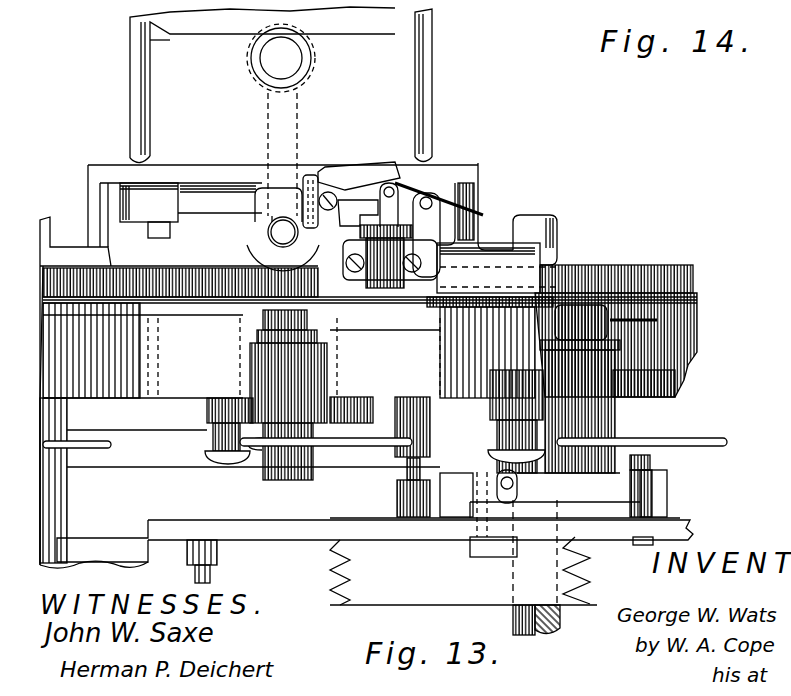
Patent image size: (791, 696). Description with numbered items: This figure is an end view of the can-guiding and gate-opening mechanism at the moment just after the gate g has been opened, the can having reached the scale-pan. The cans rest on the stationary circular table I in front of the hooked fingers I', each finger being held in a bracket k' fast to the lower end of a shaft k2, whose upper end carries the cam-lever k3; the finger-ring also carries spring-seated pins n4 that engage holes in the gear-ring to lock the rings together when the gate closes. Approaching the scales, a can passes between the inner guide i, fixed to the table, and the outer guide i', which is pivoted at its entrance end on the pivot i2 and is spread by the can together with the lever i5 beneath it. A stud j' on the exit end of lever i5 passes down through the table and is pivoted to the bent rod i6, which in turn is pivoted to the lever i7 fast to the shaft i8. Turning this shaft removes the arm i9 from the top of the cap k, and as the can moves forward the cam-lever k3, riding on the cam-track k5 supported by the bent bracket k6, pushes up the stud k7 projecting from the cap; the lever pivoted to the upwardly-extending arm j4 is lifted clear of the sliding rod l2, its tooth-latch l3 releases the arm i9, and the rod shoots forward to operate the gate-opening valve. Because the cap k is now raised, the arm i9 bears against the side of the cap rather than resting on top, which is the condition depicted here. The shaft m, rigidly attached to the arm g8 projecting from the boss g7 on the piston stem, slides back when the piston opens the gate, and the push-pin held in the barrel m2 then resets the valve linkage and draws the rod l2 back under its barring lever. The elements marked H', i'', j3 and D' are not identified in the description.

The frame H' is at (281, 85).
The gate g is at (132, 38).
The boss g7 is at (313, 58).
The arm g8 is at (293, 122).
The shaft m is at (281, 232).
The barrel m2 is at (277, 252).
The arm i9 is at (271, 218).
The inner guide i is at (501, 346).
The tooth-latch l3 is at (350, 197).
The sliding rod l2 is at (331, 194).
The pawl i'' is at (376, 178).
The link j3 is at (400, 178).
The outer guide i' is at (578, 325).
The upwardly-extending arm j4 is at (440, 235).
The cap k is at (472, 206).
The stud k7 is at (394, 300).
The bent bracket k6 is at (498, 254).
The cam-track k5 is at (441, 300).
The cam-lever k3 is at (359, 323).
The shaft k2 is at (260, 313).
The bracket k' is at (449, 410).
The spring-seated pin n4 is at (216, 442).
The hooked fingers I' is at (385, 454).
The shaft i8 is at (398, 477).
The lever i7 is at (397, 505).
The stud j' is at (474, 528).
The bent rod i6 is at (512, 548).
The pivot i2 is at (650, 468).
The lever i5 is at (650, 510).
The base plate D' is at (420, 550).
The stationary circular table I is at (341, 541).